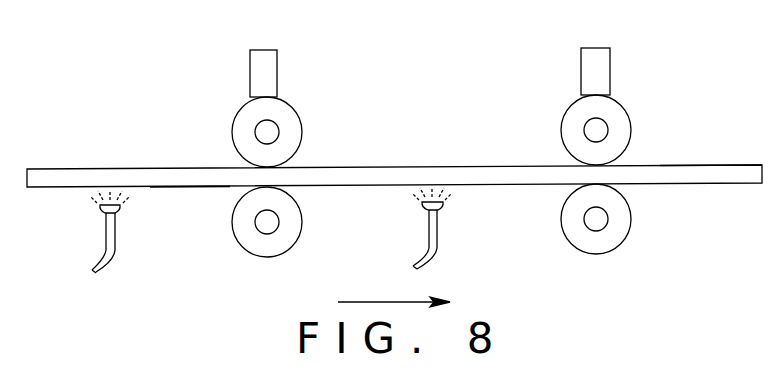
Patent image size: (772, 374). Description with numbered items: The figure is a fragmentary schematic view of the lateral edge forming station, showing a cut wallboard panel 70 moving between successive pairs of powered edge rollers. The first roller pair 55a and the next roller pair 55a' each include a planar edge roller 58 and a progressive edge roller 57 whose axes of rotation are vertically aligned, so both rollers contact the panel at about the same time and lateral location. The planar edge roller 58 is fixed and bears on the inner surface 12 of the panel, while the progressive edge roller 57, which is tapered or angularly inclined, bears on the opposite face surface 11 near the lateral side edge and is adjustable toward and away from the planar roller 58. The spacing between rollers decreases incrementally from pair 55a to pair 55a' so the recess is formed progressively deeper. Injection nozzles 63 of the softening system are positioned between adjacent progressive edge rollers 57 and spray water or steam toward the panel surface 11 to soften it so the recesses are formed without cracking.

The inner surface 12 is at (70, 169).
The face surface 11 is at (188, 187).
The wallboard panel 70 is at (690, 173).
The edge roller pair 55a is at (242, 55).
The next edge roller pair 55a' is at (617, 54).
The planar edge roller 58 is at (302, 143).
The progressive edge roller 57 is at (302, 225).
The injection nozzle 63 is at (95, 215).